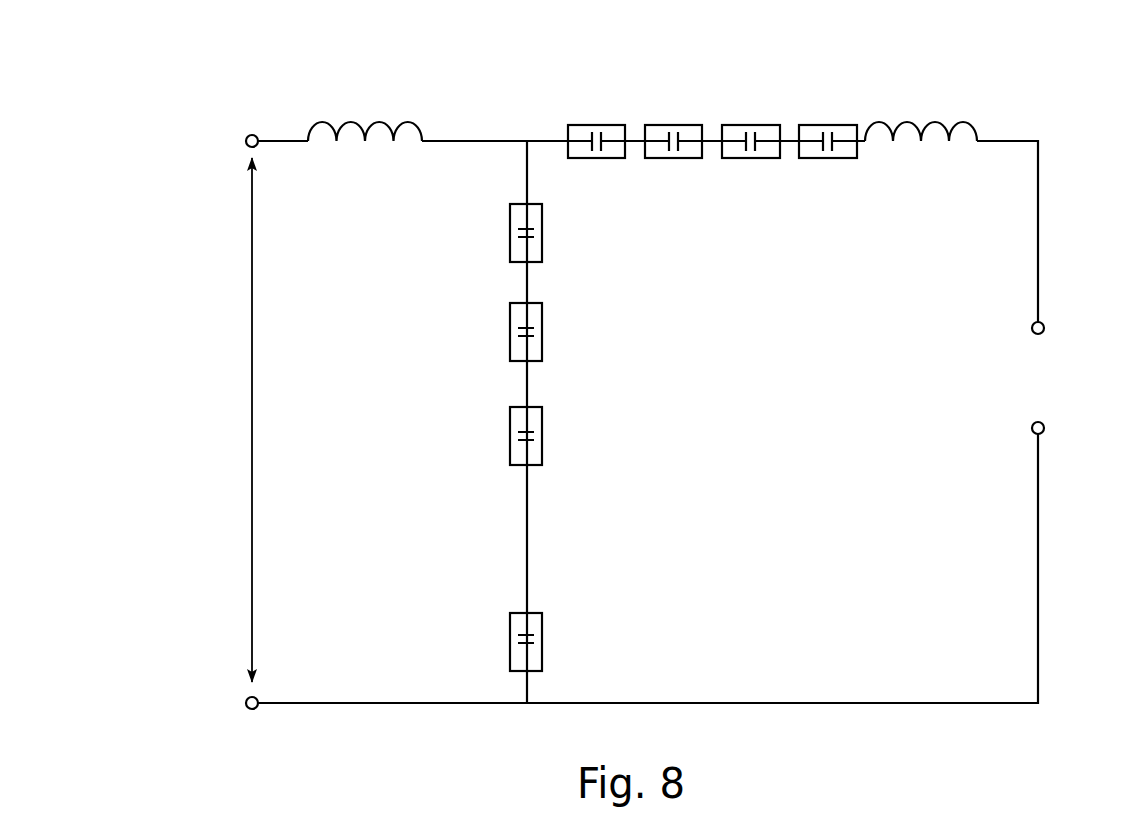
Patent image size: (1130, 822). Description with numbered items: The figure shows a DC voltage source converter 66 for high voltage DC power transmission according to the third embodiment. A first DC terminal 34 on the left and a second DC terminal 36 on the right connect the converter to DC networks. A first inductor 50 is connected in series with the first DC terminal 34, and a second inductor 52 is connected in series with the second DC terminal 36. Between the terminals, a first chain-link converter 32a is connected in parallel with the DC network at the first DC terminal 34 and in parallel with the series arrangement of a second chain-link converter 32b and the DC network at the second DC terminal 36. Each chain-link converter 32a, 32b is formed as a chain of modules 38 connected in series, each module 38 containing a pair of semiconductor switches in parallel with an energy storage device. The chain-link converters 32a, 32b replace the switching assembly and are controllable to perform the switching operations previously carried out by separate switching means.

The DC voltage source converter 66 is at (180, 95).
The first inductor 50 is at (368, 125).
The second inductor 52 is at (922, 125).
The first chain-link converter 32a is at (480, 370).
The second chain-link converter 32b is at (697, 100).
The module 38 is at (605, 335).
The first DC terminal 34 is at (215, 413).
The second DC terminal 36 is at (1060, 367).